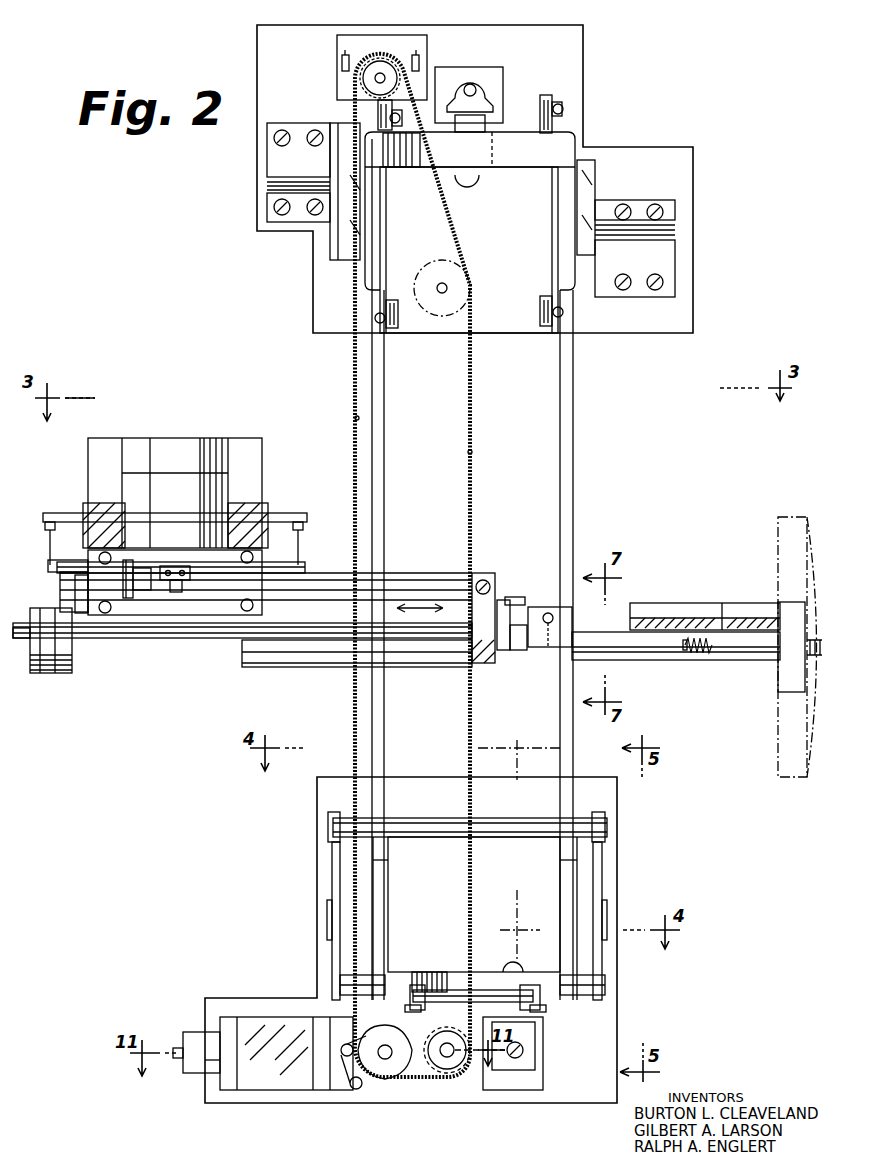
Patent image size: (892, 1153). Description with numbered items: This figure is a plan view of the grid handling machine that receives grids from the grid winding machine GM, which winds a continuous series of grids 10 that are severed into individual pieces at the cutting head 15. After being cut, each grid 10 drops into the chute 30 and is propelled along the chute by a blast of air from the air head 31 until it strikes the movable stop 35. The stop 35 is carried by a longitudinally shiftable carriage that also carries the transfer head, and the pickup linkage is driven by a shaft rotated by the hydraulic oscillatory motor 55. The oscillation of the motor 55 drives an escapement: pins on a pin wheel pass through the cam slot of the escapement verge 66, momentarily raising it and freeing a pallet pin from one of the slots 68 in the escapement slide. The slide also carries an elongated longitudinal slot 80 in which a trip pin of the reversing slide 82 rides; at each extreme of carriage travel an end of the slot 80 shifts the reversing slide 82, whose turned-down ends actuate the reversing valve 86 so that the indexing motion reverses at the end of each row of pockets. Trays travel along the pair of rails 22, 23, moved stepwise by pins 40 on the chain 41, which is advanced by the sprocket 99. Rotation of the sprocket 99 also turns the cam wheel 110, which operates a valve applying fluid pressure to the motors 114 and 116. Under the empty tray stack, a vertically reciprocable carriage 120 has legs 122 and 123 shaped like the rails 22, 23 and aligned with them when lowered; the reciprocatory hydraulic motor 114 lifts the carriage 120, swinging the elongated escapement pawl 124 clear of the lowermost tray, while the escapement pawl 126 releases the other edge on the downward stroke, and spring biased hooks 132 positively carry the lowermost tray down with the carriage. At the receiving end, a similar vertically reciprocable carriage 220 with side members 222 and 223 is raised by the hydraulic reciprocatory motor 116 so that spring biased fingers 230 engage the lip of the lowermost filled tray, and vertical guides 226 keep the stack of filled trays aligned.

The grids 10 is at (690, 653).
The cutting head 15 is at (778, 677).
The rail 22 is at (384, 702).
The rail 23 is at (560, 702).
The chute 30 is at (640, 652).
The air head 31 is at (700, 605).
The movable stop 35 is at (522, 652).
The pins 40 is at (355, 418).
The chain 41 is at (355, 368).
The hydraulic oscillatory motor 55 is at (53, 660).
The escapement verge 66 is at (143, 605).
The slots 68 is at (193, 605).
The longitudinal slot 80 is at (315, 582).
The reversing slide 82 is at (292, 567).
The reversing valve 86 is at (252, 515).
The sprocket 99 is at (412, 1078).
The cam wheel 110 is at (385, 1080).
The reciprocatory hydraulic motor 114 is at (510, 1082).
The hydraulic reciprocatory motor 116 is at (466, 68).
The vertically reciprocable carriage 120 is at (449, 957).
The leg 122 is at (383, 888).
The leg 123 is at (562, 886).
The escapement pawl 124 is at (445, 818).
The escapement pawl 126 is at (590, 985).
The spring biased hooks 132 is at (412, 990).
The vertically reciprocable carriage 220 is at (504, 181).
The side member 222 is at (380, 203).
The side member 223 is at (558, 213).
The vertical guides 226 is at (575, 145).
The spring biased fingers 230 is at (378, 114).
The grid winding machine GM is at (778, 547).